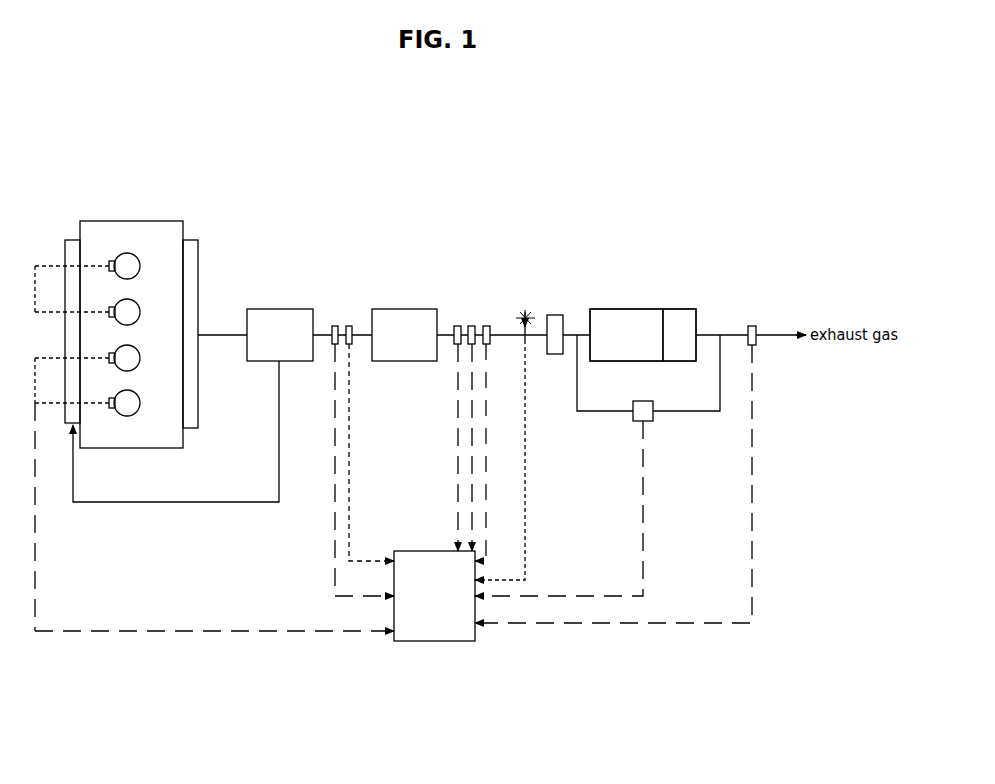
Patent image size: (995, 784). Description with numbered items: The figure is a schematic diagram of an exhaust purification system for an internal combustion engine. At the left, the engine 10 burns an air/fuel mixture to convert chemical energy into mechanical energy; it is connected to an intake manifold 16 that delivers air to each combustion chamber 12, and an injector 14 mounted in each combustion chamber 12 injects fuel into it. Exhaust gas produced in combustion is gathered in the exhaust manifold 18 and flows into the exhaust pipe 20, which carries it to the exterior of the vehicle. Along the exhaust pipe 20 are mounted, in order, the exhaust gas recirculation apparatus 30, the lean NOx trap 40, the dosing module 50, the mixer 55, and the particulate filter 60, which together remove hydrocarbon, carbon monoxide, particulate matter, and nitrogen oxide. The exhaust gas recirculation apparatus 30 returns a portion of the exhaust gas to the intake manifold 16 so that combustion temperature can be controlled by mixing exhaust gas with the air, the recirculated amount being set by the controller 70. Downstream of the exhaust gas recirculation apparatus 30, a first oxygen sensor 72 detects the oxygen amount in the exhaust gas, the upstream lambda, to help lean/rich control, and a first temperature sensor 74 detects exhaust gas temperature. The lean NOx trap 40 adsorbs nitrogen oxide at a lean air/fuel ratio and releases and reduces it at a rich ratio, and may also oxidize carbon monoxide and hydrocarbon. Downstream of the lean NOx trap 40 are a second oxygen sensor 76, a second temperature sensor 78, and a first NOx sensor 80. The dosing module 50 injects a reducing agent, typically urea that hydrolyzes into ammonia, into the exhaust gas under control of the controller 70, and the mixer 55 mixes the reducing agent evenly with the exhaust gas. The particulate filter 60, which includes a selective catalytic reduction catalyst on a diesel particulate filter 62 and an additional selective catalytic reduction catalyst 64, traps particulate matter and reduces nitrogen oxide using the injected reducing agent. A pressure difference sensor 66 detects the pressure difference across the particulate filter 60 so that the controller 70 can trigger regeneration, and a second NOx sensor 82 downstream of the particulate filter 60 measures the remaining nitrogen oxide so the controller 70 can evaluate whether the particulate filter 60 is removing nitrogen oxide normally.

The engine 10 is at (158, 196).
The combustion chamber 12 is at (127, 253).
The injector 14 is at (109, 262).
The intake manifold 16 is at (66, 240).
The exhaust manifold 18 is at (192, 240).
The exhaust pipe 20 is at (222, 332).
The exhaust gas recirculation apparatus 30 is at (262, 309).
The lean NOx trap 40 is at (393, 309).
The dosing module 50 is at (521, 311).
The mixer 55 is at (555, 315).
The particulate filter 60 is at (643, 298).
The selective catalytic reduction catalyst on a diesel particulate filter 62 is at (604, 309).
The additional selective catalytic reduction catalyst 64 is at (684, 309).
The pressure difference sensor 66 is at (650, 421).
The controller 70 is at (418, 641).
The first oxygen sensor 72 is at (333, 326).
The first temperature sensor 74 is at (349, 326).
The second oxygen sensor 76 is at (456, 326).
The second temperature sensor 78 is at (471, 326).
The first NOx sensor 80 is at (486, 326).
The second NOx sensor 82 is at (753, 326).